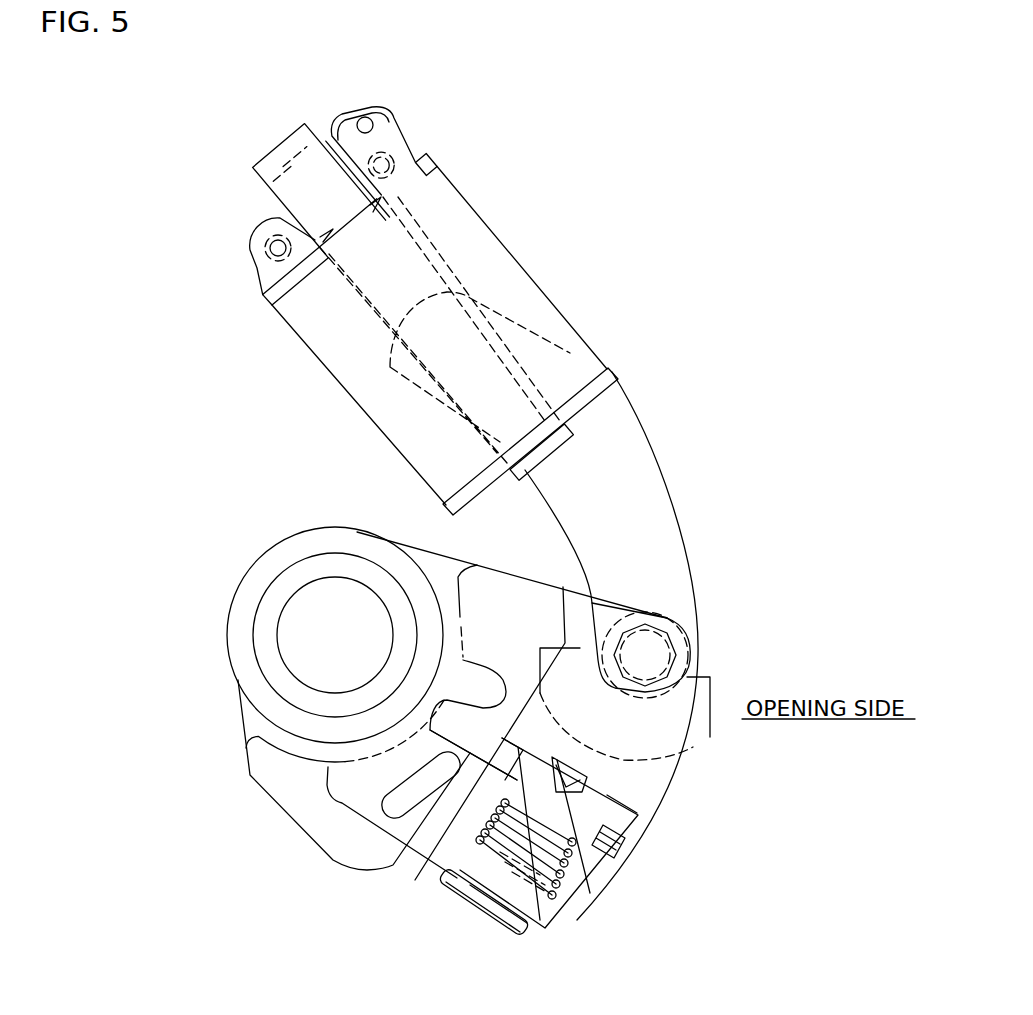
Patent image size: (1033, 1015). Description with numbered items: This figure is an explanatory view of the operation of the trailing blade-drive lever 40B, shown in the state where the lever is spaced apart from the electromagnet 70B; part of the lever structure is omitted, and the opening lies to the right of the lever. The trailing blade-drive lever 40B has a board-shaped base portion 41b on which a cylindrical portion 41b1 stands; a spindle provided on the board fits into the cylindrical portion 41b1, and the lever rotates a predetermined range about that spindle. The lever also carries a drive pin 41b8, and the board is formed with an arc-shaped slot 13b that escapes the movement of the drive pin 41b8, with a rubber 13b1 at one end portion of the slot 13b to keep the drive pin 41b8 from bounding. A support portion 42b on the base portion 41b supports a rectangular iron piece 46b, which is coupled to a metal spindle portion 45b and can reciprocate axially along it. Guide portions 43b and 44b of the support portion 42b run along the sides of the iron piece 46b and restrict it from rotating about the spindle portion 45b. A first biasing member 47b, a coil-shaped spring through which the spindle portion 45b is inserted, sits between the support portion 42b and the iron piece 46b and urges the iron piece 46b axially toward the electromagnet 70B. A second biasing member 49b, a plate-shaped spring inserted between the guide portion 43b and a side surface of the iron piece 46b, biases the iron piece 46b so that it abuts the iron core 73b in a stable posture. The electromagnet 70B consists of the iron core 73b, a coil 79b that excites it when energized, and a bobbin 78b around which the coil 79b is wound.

The electromagnet 70B is at (478, 311).
The coil 79b is at (498, 270).
The bobbin 78b is at (613, 367).
The iron core 73b is at (560, 452).
The arc-shaped slot 13b is at (632, 646).
The rubber 13b1 is at (693, 727).
The base portion 41b is at (460, 732).
The cylindrical portion 41b1 is at (267, 645).
The drive pin 41b8 is at (655, 648).
The trailing blade-drive lever 40B is at (460, 771).
The guide portion 44b is at (420, 850).
The support portion 42b is at (436, 885).
The guide portion 43b is at (607, 847).
The spindle portion 45b is at (508, 948).
The iron piece 46b is at (616, 792).
The first biasing member 47b is at (582, 874).
The second biasing member 49b is at (618, 836).